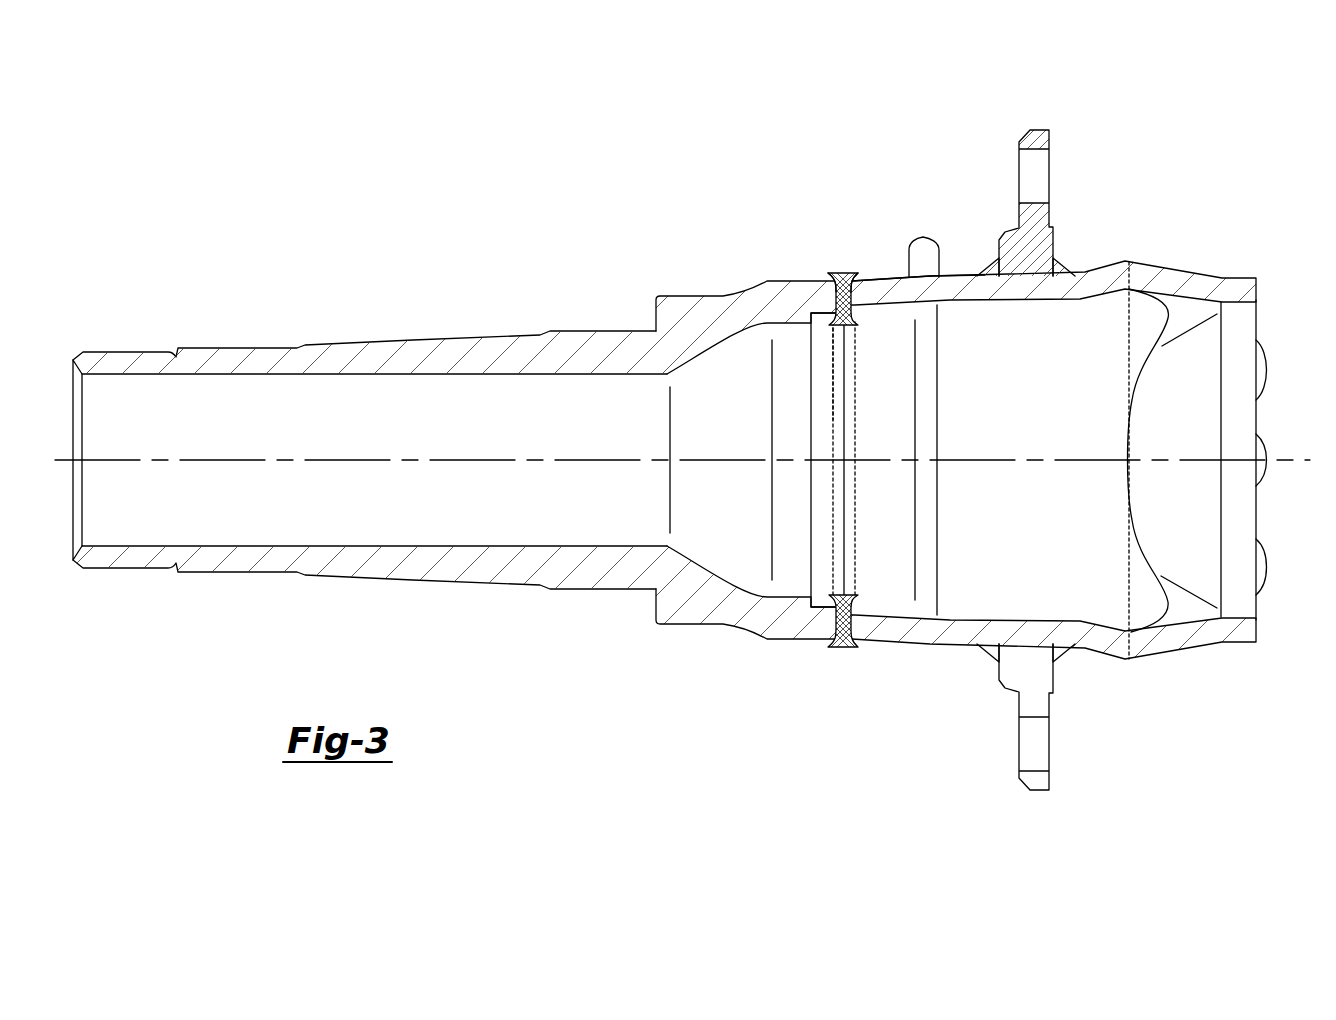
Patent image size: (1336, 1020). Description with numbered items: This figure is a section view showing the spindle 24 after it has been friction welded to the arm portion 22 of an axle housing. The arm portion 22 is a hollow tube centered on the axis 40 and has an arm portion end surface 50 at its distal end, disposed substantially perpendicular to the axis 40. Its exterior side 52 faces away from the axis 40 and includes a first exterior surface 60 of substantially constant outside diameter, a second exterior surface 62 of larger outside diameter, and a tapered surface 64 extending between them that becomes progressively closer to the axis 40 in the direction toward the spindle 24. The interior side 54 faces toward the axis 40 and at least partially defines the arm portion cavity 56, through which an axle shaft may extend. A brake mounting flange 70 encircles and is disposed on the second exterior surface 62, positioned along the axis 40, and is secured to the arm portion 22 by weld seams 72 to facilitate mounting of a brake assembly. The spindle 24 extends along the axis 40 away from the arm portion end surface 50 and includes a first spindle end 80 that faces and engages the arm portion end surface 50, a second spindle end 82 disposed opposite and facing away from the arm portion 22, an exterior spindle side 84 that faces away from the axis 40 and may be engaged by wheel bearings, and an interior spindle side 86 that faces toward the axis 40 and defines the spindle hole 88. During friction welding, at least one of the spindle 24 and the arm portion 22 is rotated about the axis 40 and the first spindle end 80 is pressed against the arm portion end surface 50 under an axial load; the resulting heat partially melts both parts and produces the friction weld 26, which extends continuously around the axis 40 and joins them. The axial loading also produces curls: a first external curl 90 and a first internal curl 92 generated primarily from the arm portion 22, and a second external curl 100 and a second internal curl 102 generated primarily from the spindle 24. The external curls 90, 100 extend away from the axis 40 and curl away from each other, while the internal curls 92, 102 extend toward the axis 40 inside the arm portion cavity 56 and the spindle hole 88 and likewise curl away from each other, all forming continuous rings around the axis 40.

The arm portion 22 is at (1187, 272).
The spindle 24 is at (364, 414).
The friction weld 26 is at (843, 441).
The axis 40 is at (623, 462).
The arm portion end surface 50 is at (833, 438).
The exterior side 52 is at (867, 659).
The interior side 54 is at (843, 507).
The arm portion cavity 56 is at (1036, 447).
The first exterior surface 60 is at (893, 280).
The second exterior surface 62 is at (965, 278).
The tapered surface 64 is at (923, 237).
The brake mounting flange 70 is at (1040, 130).
The weld seam 72 is at (993, 270).
The first spindle end 80 is at (845, 425).
The second spindle end 82 is at (73, 360).
The exterior spindle side 84 is at (362, 337).
The interior spindle side 86 is at (545, 376).
The spindle hole 88 is at (436, 447).
The first external curl 90 is at (857, 273).
The first internal curl 92 is at (855, 412).
The second external curl 100 is at (829, 273).
The second internal curl 102 is at (833, 412).